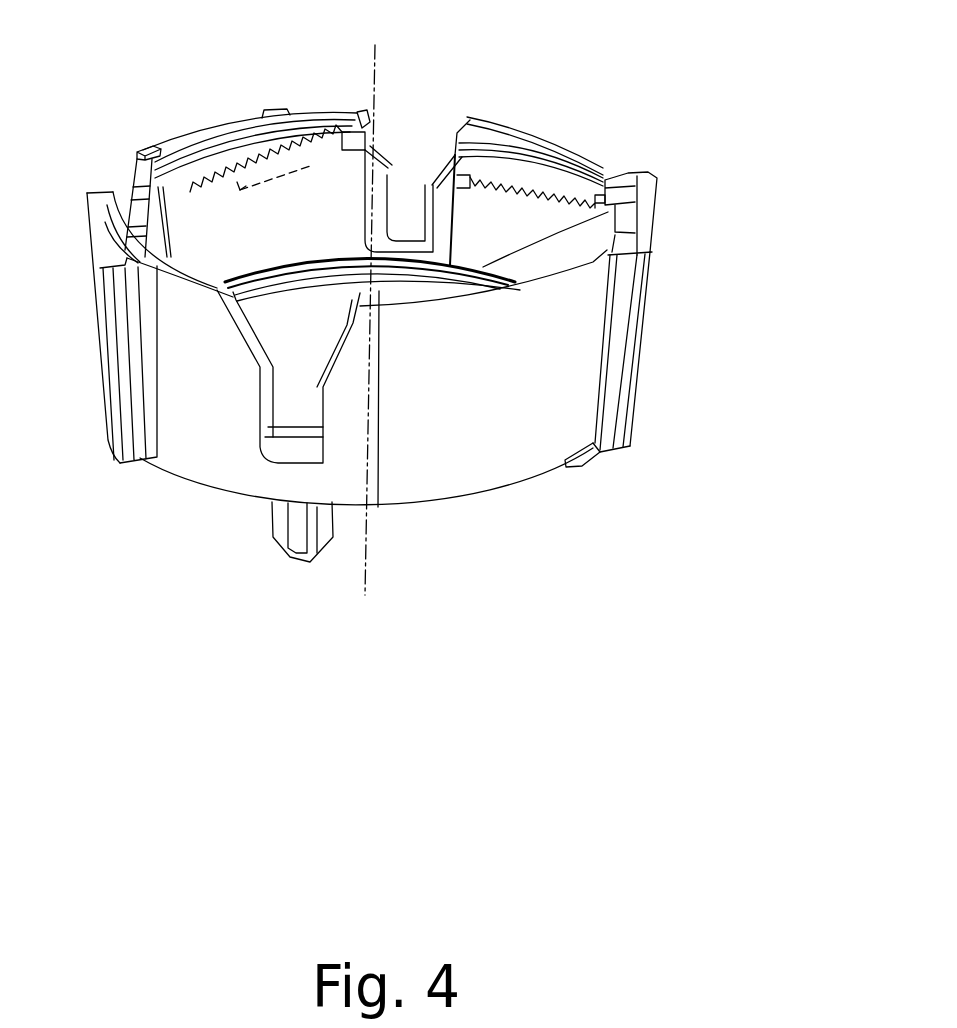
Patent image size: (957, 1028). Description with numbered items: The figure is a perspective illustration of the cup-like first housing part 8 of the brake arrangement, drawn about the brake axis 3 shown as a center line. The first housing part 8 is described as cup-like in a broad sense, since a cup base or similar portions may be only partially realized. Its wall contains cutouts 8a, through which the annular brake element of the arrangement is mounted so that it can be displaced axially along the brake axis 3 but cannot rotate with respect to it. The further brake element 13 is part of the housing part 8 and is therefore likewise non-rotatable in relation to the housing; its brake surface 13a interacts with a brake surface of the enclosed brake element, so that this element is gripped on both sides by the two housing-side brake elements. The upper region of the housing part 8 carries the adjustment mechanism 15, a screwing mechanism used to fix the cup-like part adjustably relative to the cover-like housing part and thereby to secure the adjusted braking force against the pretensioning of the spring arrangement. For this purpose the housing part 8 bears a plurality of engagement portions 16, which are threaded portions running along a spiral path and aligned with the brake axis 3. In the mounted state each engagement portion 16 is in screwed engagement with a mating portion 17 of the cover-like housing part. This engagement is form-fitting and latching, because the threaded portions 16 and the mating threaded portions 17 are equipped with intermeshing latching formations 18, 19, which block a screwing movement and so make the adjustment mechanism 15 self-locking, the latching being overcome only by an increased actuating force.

The brake axis 3 is at (377, 84).
The first housing part 8 is at (493, 443).
The cutouts 8a is at (273, 433).
The further brake element 13 is at (483, 263).
The brake surface 13a is at (380, 291).
The adjustment mechanism 15 is at (376, 147).
The engagement portions 16 is at (208, 173).
The mating portions 17 is at (308, 157).
The latching formations 18 is at (187, 197).
The latching formations 19 is at (250, 162).